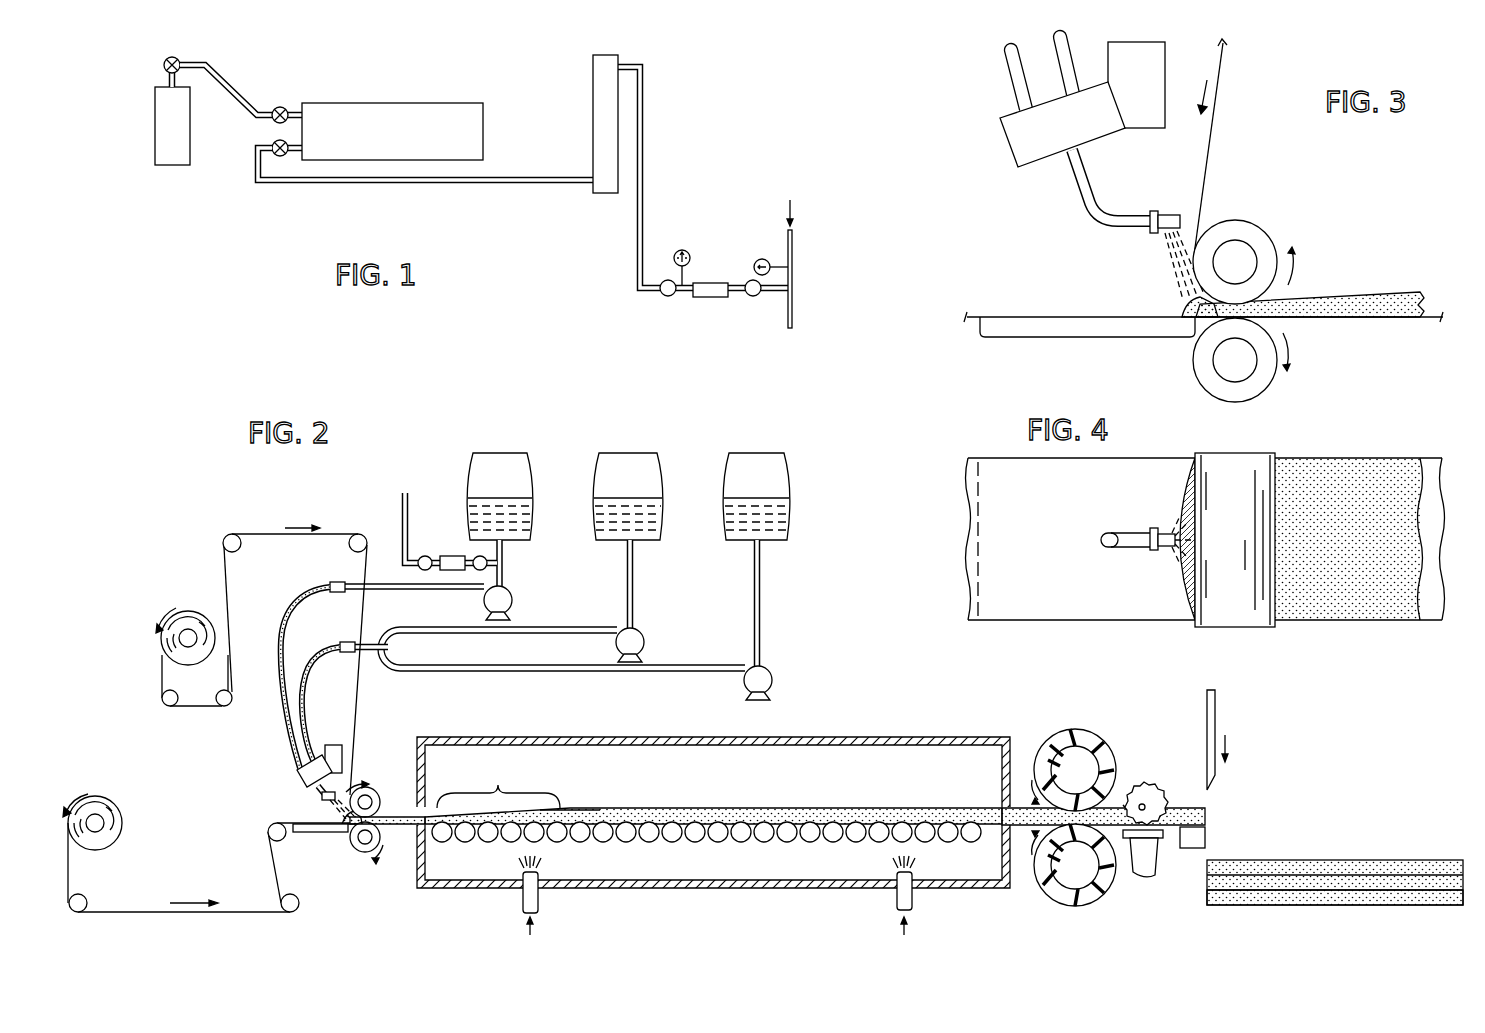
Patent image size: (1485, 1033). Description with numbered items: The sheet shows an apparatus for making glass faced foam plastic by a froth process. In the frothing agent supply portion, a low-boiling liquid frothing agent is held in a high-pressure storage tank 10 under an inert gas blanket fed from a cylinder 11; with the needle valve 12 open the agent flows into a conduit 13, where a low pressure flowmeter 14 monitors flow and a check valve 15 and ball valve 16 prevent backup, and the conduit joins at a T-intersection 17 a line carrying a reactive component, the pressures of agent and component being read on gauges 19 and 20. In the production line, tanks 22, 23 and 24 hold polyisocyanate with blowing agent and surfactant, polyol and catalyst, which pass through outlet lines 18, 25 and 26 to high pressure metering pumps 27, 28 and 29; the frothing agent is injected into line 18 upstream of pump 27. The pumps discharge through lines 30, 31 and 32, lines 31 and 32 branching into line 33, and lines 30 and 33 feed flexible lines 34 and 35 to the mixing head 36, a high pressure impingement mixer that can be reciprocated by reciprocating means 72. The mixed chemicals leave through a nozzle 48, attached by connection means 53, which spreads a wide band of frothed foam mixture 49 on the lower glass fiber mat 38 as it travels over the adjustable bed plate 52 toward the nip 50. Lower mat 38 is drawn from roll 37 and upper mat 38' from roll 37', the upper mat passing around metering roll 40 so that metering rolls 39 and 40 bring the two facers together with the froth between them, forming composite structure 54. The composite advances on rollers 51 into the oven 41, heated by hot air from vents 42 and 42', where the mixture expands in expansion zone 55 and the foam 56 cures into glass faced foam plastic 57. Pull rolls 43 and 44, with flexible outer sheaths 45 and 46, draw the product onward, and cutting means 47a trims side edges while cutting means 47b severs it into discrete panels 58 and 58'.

In FIG. 1, the storage tank 10 is at (378, 105).
In FIG. 1, the cylinder 11 is at (155, 130).
In FIG. 1, the needle valve 12 is at (669, 297).
In FIG. 2, the needle valve 12 is at (425, 556).
In FIG. 1, the conduit 13 is at (442, 183).
In FIG. 2, the conduit 13 is at (412, 505).
In FIG. 1, the low pressure flowmeter 14 is at (593, 100).
In FIG. 1, the check valve 15 is at (710, 283).
In FIG. 2, the check valve 15 is at (453, 556).
In FIG. 1, the ball valve 16 is at (752, 297).
In FIG. 2, the ball valve 16 is at (476, 556).
In FIG. 1, the T-intersection 17 is at (792, 290).
In FIG. 2, the T-intersection 17 is at (503, 566).
In FIG. 2, the outlet line 18 is at (503, 553).
In FIG. 1, the gauge 19 is at (682, 250).
In FIG. 1, the gauge 20 is at (762, 259).
In FIG. 2, the tank 22 is at (523, 457).
In FIG. 2, the tank 23 is at (653, 457).
In FIG. 2, the tank 24 is at (788, 457).
In FIG. 2, the outlet line 25 is at (634, 575).
In FIG. 2, the outlet line 26 is at (761, 575).
In FIG. 2, the high pressure metering pump 27 is at (513, 605).
In FIG. 2, the high pressure metering pump 28 is at (649, 636).
In FIG. 2, the high pressure metering pump 29 is at (776, 669).
In FIG. 2, the line 30 is at (402, 583).
In FIG. 2, the line 31 is at (408, 627).
In FIG. 2, the line 32 is at (444, 670).
In FIG. 2, the line 33 is at (348, 642).
In FIG. 2, the flexible line 34 is at (284, 614).
In FIG. 2, the flexible line 35 is at (308, 670).
In FIG. 3, the mixing head 36 is at (1004, 131).
In FIG. 2, the mixing head 36 is at (298, 767).
In FIG. 2, the roll 37 is at (109, 816).
In FIG. 2, the roll 37' is at (194, 640).
In FIG. 3, the lower glass fiber mat 38 is at (1203, 298).
In FIG. 4, the lower glass fiber mat 38 is at (1201, 521).
In FIG. 2, the lower glass fiber mat 38 is at (209, 887).
In FIG. 3, the upper glass fiber mat 38' is at (1232, 147).
In FIG. 2, the upper glass fiber mat 38' is at (317, 660).
In FIG. 3, the metering roll 39 is at (1268, 375).
In FIG. 2, the metering roll 39 is at (362, 852).
In FIG. 3, the metering roll 40 is at (1262, 246).
In FIG. 4, the metering roll 40 is at (1235, 465).
In FIG. 2, the metering roll 40 is at (370, 786).
In FIG. 2, the oven 41 is at (915, 738).
In FIG. 2, the vent 42 is at (558, 896).
In FIG. 2, the vent 42' is at (928, 896).
In FIG. 2, the pull roll 43 is at (1060, 889).
In FIG. 2, the pull roll 44 is at (1074, 754).
In FIG. 2, the flexible outer sheath 45 is at (1101, 905).
In FIG. 2, the flexible outer sheath 46 is at (1101, 748).
In FIG. 2, the cutting means 47a is at (1146, 795).
In FIG. 2, the cutting means 47b is at (1226, 709).
In FIG. 3, the nozzle 48 is at (1161, 211).
In FIG. 4, the nozzle 48 is at (1160, 550).
In FIG. 2, the nozzle 48 is at (322, 797).
In FIG. 3, the frothed foam mixture 49 is at (1180, 308).
In FIG. 4, the frothed foam mixture 49 is at (1179, 572).
In FIG. 2, the frothed foam mixture 49 is at (342, 820).
In FIG. 2, the nip 50 is at (360, 842).
In FIG. 2, the rollers 51 is at (696, 840).
In FIG. 3, the bed plate 52 is at (1090, 338).
In FIG. 4, the bed plate 52 is at (977, 520).
In FIG. 2, the bed plate 52 is at (305, 832).
In FIG. 3, the connection means 53 is at (1082, 188).
In FIG. 4, the connection means 53 is at (1120, 535).
In FIG. 2, the connection means 53 is at (314, 788).
In FIG. 2, the composite structure 54 is at (394, 817).
In FIG. 2, the expansion zone 55 is at (713, 793).
In FIG. 2, the foam 56 is at (570, 818).
In FIG. 2, the glass faced foam plastic 57 is at (1025, 806).
In FIG. 2, the discrete panel 58 is at (1335, 867).
In FIG. 2, the discrete panel 58' is at (1335, 915).
In FIG. 3, the reciprocating means 72 is at (1150, 130).
In FIG. 2, the reciprocating means 72 is at (334, 745).